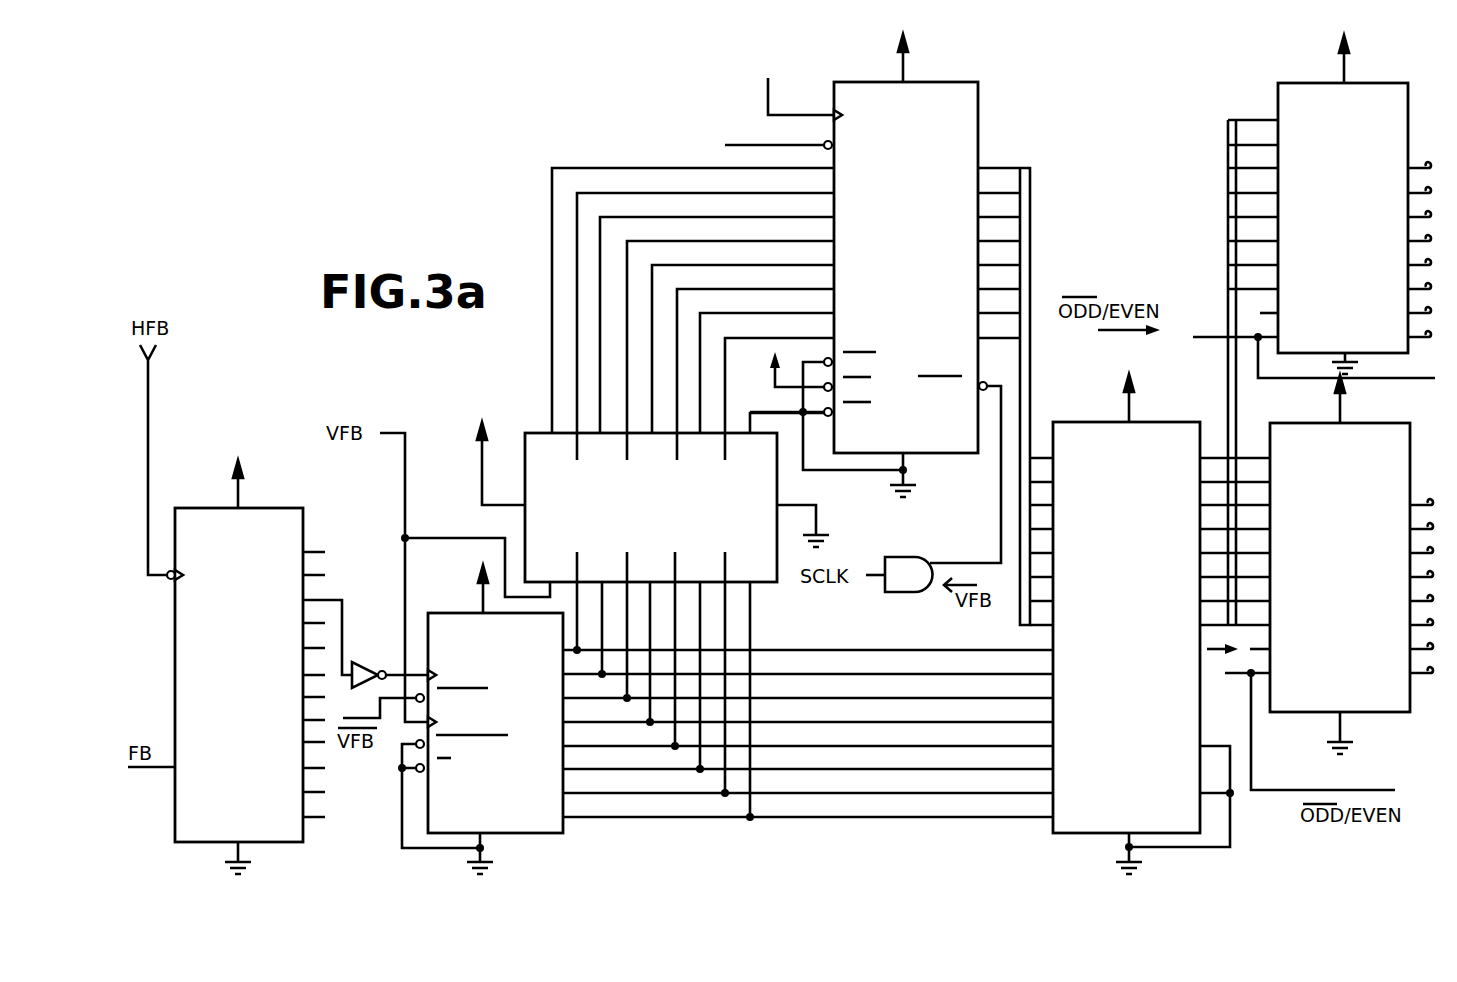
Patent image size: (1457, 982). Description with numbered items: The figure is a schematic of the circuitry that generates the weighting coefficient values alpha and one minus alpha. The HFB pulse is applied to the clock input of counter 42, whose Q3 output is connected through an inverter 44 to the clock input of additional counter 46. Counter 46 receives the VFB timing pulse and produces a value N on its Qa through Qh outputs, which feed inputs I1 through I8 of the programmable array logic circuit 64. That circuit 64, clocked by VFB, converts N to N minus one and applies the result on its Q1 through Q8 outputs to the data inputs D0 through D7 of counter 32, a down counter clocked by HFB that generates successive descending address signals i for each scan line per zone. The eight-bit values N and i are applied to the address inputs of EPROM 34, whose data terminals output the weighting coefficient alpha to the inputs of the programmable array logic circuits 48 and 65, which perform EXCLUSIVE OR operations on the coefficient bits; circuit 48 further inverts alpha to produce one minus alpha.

The counter 32 is at (955, 82).
The EPROM 34 is at (1108, 422).
The counter 42 is at (270, 508).
The inverter 44 is at (361, 661).
The additional counter 46 is at (465, 613).
The programmable array logic circuit 48 is at (1305, 83).
The programmable array logic circuit 64 is at (533, 433).
The programmable array logic circuit 65 is at (1305, 423).